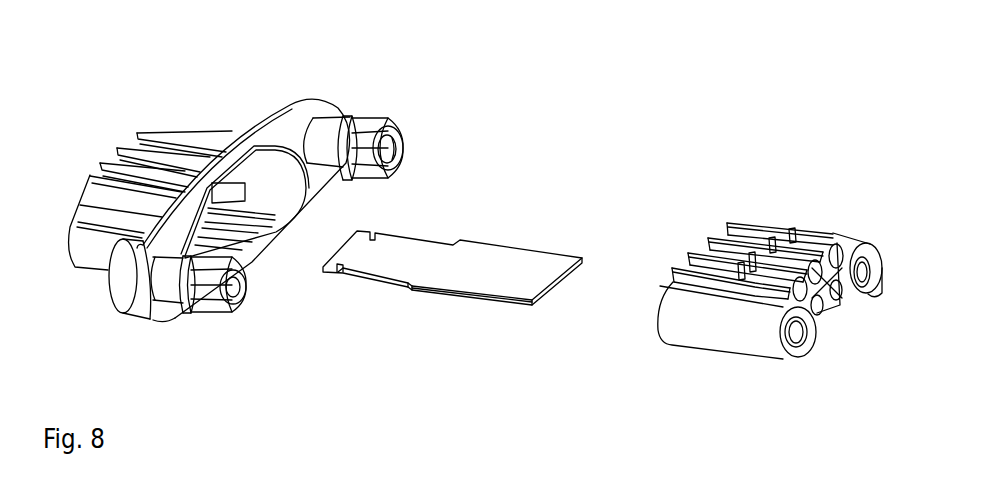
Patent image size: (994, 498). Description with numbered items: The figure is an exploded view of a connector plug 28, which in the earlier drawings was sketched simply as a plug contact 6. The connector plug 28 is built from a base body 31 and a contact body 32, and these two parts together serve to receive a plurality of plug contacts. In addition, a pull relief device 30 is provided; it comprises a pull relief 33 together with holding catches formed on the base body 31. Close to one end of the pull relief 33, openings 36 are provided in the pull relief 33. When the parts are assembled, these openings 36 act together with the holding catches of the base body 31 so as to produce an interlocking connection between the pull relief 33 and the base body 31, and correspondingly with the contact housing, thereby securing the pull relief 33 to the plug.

The connector plug 28 is at (123, 78).
The base body 31 is at (218, 100).
The pull relief device 30 is at (540, 258).
The pull relief 33 is at (458, 280).
The openings 36 is at (336, 272).
The contact body 32 is at (763, 213).
The plug contact 6 is at (868, 300).